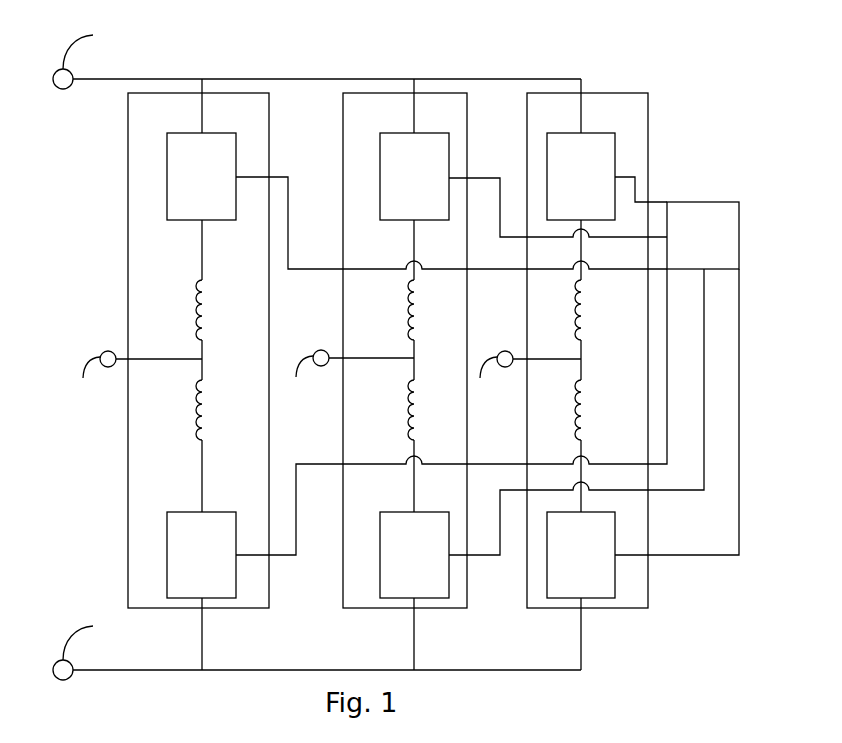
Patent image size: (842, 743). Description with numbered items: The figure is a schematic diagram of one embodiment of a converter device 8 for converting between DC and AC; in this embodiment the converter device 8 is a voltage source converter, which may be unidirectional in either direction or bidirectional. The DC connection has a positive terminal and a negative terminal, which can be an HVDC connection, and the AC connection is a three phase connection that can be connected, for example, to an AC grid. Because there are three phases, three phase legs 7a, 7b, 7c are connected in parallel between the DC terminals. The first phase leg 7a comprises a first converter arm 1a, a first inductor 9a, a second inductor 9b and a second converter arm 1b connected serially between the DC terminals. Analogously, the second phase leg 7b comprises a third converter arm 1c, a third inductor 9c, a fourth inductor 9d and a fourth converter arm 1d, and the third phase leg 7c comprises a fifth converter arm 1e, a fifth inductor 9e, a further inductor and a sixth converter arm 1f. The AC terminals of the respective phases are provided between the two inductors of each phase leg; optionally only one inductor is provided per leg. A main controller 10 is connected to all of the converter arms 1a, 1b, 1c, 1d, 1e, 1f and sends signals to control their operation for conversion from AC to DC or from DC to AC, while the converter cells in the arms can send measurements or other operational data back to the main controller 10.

The converter device 8 is at (643, 79).
The first phase leg 7a is at (261, 124).
The second phase leg 7b is at (460, 124).
The third phase leg 7c is at (640, 124).
The first converter arm 1a is at (188, 189).
The second converter arm 1b is at (188, 568).
The third converter arm 1c is at (400, 189).
The fourth converter arm 1d is at (400, 568).
The fifth converter arm 1e is at (567, 189).
The sixth converter arm 1f is at (569, 568).
The first inductor 9a is at (204, 300).
The second inductor 9b is at (204, 400).
The third inductor 9c is at (416, 300).
The fourth inductor 9d is at (416, 400).
The fifth inductor 9e is at (583, 400).
The main controller 10 is at (689, 247).